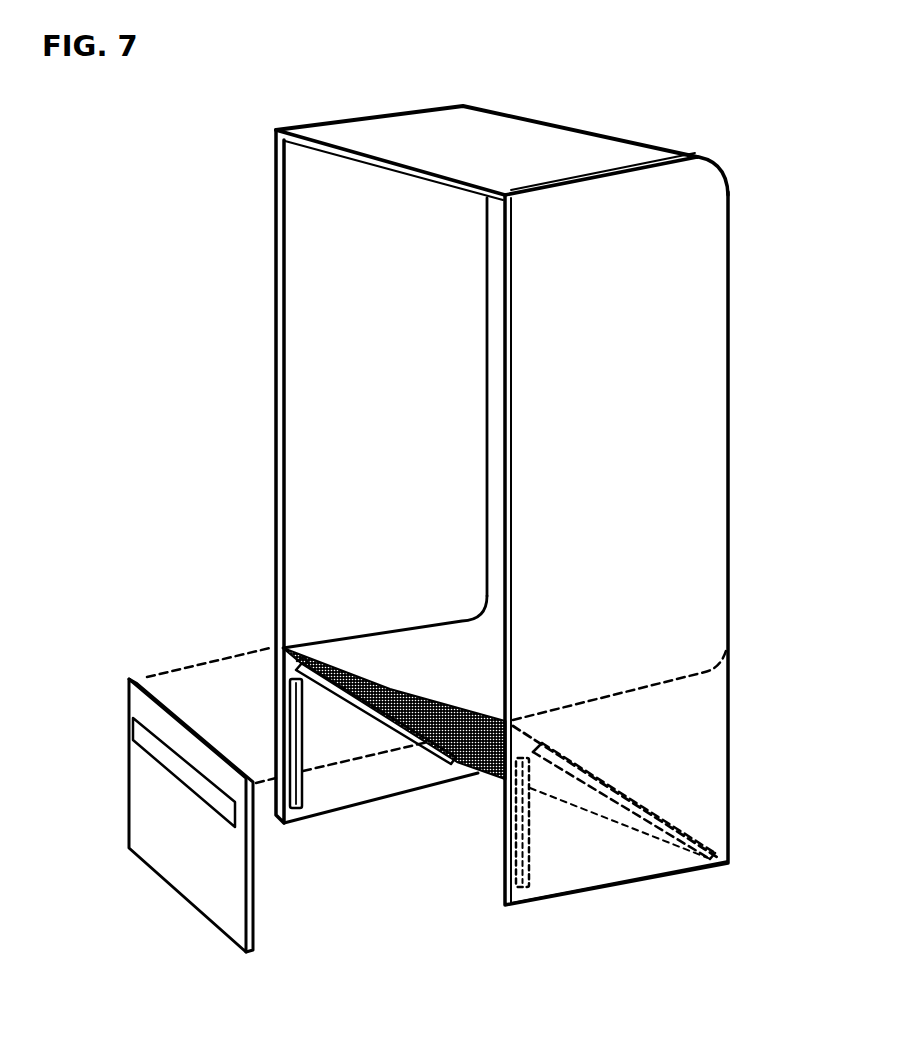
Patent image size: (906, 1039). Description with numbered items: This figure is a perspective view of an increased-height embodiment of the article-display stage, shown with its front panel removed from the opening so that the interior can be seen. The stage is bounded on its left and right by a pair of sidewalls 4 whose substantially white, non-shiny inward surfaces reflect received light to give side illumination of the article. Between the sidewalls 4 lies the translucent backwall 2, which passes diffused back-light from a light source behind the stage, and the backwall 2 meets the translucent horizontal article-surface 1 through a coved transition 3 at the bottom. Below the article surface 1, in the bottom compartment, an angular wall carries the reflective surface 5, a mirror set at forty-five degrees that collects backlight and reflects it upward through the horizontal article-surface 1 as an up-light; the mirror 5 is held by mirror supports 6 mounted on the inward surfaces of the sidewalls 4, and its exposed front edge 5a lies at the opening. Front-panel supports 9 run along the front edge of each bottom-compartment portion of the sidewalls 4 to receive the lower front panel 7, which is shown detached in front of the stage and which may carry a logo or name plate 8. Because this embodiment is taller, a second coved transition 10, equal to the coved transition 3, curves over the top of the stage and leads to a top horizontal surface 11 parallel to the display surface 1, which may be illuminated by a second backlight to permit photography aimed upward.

The horizontal article-surface 1 is at (386, 652).
The backwall 2 is at (495, 342).
The coved transition 3 is at (488, 615).
The sidewalls 4 is at (315, 516).
The reflective surface (mirror) 5 is at (575, 756).
The front edge of inclined plate 5a is at (483, 776).
The mirror supports 6 is at (369, 708).
The lower front panel 7 is at (222, 905).
The window opening 8 is at (166, 758).
The front-panel supports 9 is at (306, 778).
The second coved transition 10 is at (724, 163).
The top horizontal surface 11 is at (452, 119).